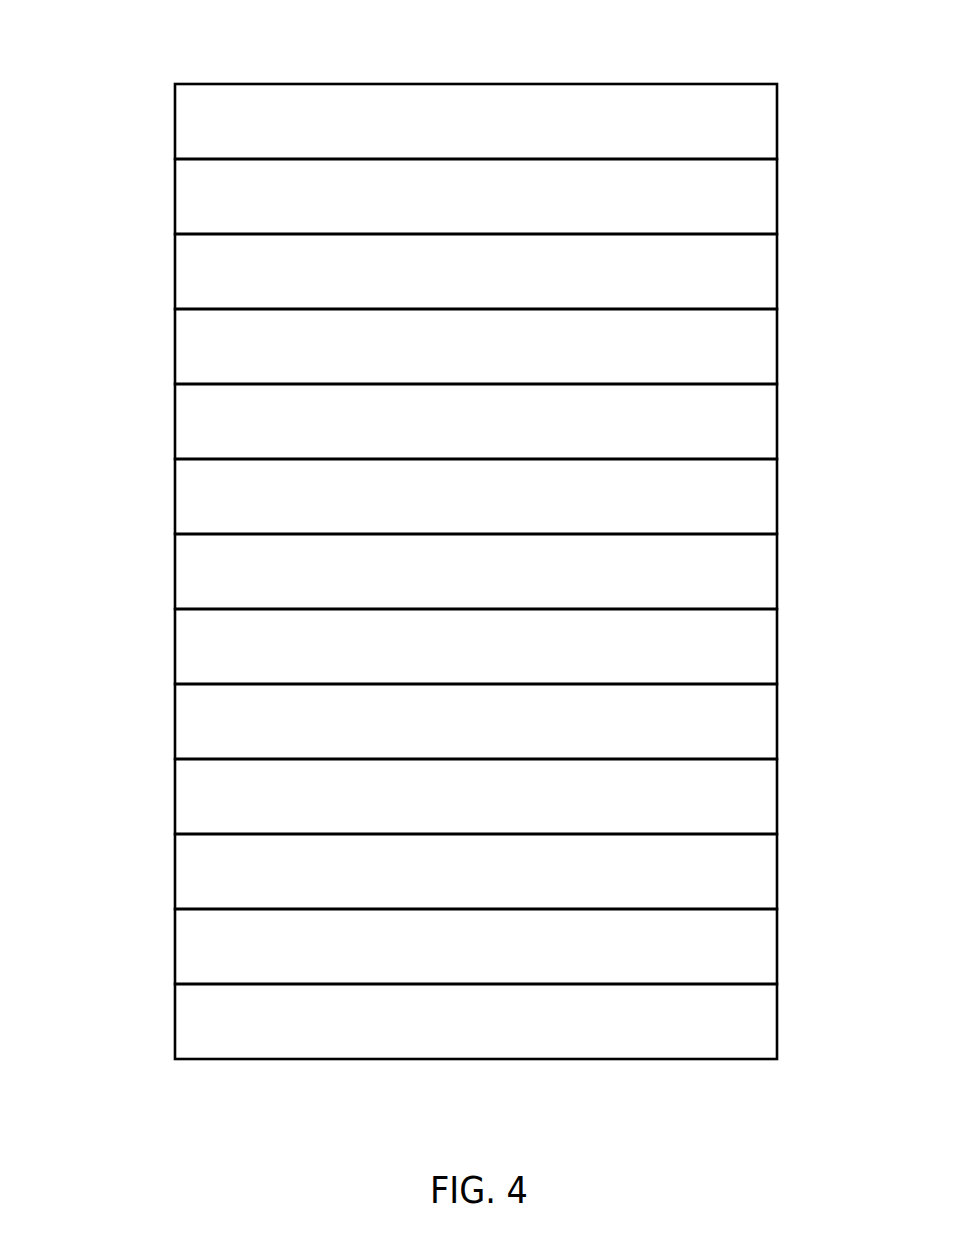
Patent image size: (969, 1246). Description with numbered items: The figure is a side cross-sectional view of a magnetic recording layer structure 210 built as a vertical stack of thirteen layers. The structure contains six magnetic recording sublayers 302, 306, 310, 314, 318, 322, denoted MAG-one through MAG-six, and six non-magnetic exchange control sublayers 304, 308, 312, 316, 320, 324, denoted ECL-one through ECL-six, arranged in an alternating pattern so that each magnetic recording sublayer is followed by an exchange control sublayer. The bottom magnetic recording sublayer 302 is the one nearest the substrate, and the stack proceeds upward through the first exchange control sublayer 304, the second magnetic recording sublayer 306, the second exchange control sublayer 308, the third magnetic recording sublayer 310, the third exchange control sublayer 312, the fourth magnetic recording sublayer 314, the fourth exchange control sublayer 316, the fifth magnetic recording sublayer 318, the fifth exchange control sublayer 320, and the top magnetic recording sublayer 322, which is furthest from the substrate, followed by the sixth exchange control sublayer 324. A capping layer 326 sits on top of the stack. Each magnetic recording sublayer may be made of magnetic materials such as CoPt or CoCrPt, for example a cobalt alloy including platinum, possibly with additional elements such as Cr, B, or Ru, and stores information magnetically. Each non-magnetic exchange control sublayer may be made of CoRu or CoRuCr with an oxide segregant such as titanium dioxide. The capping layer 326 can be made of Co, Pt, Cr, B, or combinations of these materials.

The magnetic recording layer structure 210 is at (448, 539).
The capping layer 326 is at (779, 136).
The non-magnetic exchange control sublayer 324 is at (779, 210).
The magnetic recording sublayer 322 is at (779, 284).
The non-magnetic exchange control sublayer 320 is at (779, 358).
The magnetic recording sublayer 318 is at (779, 432).
The non-magnetic exchange control sublayer 316 is at (779, 506).
The magnetic recording sublayer 314 is at (779, 580).
The non-magnetic exchange control sublayer 312 is at (779, 654).
The magnetic recording sublayer 310 is at (779, 728).
The non-magnetic exchange control sublayer 308 is at (779, 802).
The magnetic recording sublayer 306 is at (779, 876).
The non-magnetic exchange control sublayer 304 is at (779, 950).
The magnetic recording sublayer 302 is at (779, 1024).